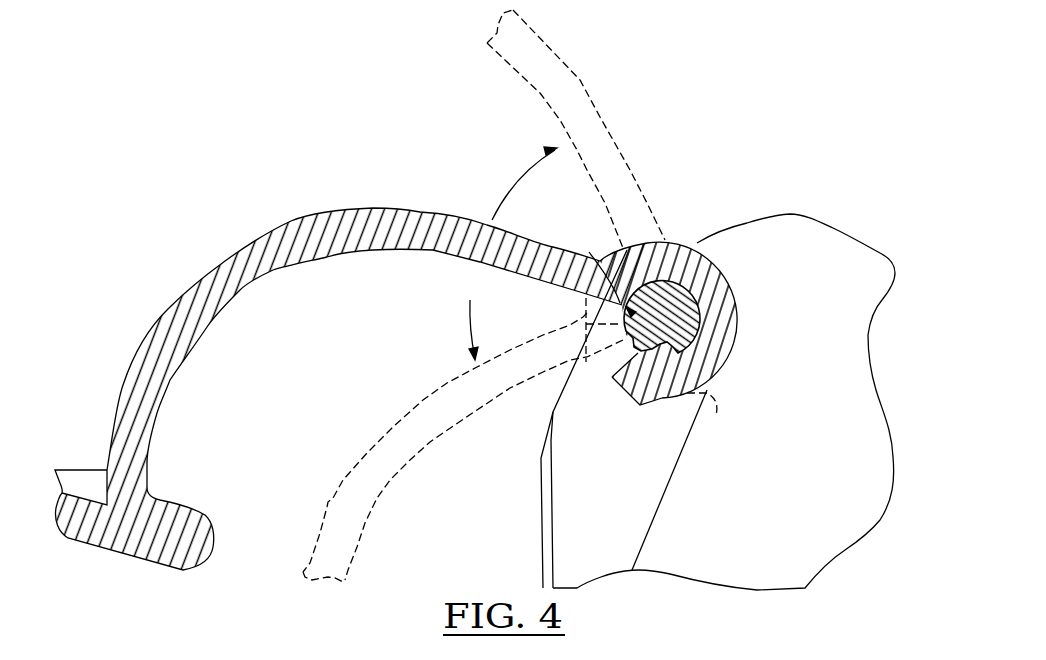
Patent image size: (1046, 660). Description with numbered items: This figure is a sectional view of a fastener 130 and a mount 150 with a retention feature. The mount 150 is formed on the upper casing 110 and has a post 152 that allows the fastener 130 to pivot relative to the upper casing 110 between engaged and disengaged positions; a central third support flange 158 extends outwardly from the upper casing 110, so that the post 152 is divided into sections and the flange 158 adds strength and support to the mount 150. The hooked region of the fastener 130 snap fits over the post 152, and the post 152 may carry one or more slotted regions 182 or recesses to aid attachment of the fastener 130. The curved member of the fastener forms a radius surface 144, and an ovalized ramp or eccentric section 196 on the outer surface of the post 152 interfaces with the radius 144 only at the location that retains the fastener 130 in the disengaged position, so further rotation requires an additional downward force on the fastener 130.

The first casing 110 is at (812, 352).
The fastener 130 is at (322, 240).
The radius surface 144 is at (589, 252).
The mount 150 is at (813, 317).
The post 152 is at (667, 305).
The third support flange 158 is at (826, 408).
The slotted region 182 is at (612, 338).
The eccentric section 196 is at (657, 353).